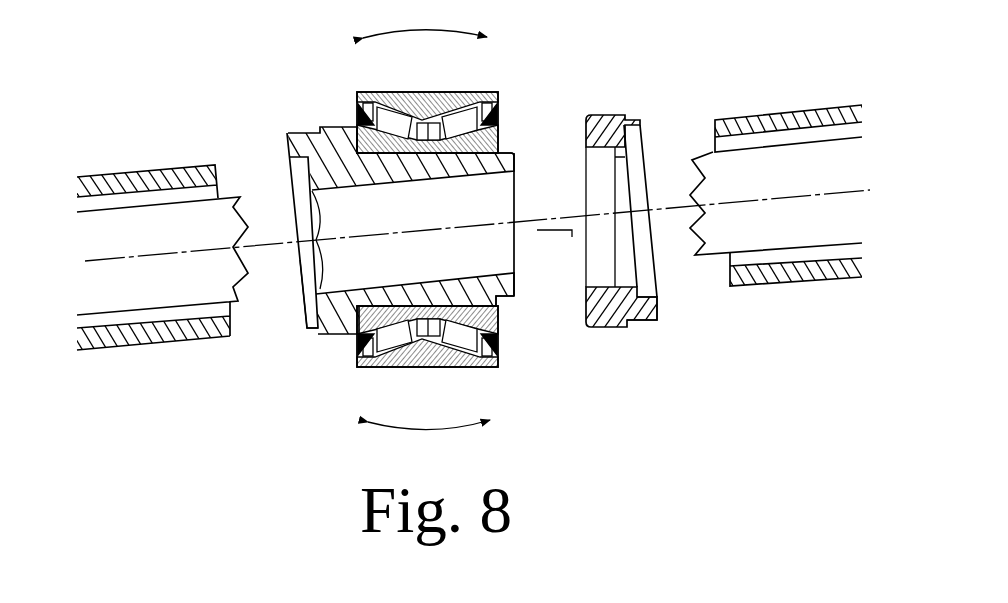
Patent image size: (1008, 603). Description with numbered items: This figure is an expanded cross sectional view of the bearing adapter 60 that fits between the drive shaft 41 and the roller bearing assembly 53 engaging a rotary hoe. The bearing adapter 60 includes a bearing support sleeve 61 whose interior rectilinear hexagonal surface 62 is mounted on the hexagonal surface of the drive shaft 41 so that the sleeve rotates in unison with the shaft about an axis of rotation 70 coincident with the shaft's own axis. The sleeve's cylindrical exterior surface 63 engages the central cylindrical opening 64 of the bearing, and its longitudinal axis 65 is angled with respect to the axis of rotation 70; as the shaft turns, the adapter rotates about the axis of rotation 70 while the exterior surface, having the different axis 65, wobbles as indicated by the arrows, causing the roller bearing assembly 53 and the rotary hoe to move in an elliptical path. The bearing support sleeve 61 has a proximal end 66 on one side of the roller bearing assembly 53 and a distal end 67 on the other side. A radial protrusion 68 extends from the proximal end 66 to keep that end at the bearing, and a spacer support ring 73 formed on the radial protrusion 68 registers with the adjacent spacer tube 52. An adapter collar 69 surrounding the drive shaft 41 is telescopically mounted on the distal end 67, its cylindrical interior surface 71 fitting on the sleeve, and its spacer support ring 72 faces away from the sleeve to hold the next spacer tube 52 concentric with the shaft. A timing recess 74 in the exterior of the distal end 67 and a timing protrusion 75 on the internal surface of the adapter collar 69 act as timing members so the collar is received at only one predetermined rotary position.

The drive shaft 41 is at (781, 252).
The spacer tube 52 is at (456, 216).
The roller bearing assembly 53 is at (481, 93).
The bearing adapter 60 is at (408, 228).
The bearing support sleeve 61 is at (521, 152).
The interior rectilinear hexagonal surface 62 is at (507, 267).
The cylindrical exterior surface 63 is at (505, 151).
The central cylindrical opening 64 is at (350, 322).
The longitudinal axis 65 is at (572, 237).
The proximal end 66 is at (300, 320).
The distal end 67 is at (516, 183).
The radial protrusion 68 is at (380, 306).
The adapter collar 69 is at (609, 211).
The axis of rotation 70 is at (87, 260).
The cylindrical interior surface 71 is at (600, 147).
The spacer support ring 72 is at (657, 320).
The spacer support ring 73 is at (292, 132).
The timing recess 74 is at (507, 300).
The timing protrusion 75 is at (590, 290).